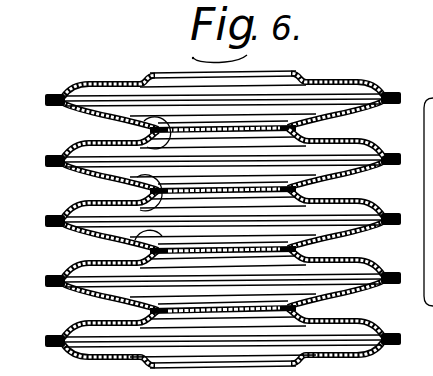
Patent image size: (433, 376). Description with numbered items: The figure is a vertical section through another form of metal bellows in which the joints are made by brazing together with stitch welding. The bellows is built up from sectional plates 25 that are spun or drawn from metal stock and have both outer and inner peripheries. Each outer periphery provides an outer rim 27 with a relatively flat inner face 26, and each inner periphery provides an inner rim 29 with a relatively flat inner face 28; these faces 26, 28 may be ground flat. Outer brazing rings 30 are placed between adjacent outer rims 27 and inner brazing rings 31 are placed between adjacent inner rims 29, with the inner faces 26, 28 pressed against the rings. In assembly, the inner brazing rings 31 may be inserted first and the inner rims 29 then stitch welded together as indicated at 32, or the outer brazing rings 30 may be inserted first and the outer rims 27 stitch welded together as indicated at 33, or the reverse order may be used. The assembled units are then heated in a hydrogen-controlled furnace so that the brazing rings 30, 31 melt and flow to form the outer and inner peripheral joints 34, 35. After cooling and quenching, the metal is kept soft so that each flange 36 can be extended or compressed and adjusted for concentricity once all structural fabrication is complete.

The sectional plates 25 is at (314, 82).
The inner faces of outer rims 26 is at (72, 210).
The outer rims 27 is at (53, 215).
The inner faces of inner rims 28 is at (108, 206).
The inner rims 29 is at (166, 118).
The outer brazing rings 30 is at (92, 231).
The inner brazing rings 31 is at (147, 149).
The stitch weld of inner rims 32 is at (160, 197).
The stitch weld of outer rims 33 is at (392, 156).
The outer peripheral joints 34 is at (394, 181).
The inner peripheral joints 35 is at (150, 246).
The flange 36 is at (376, 135).